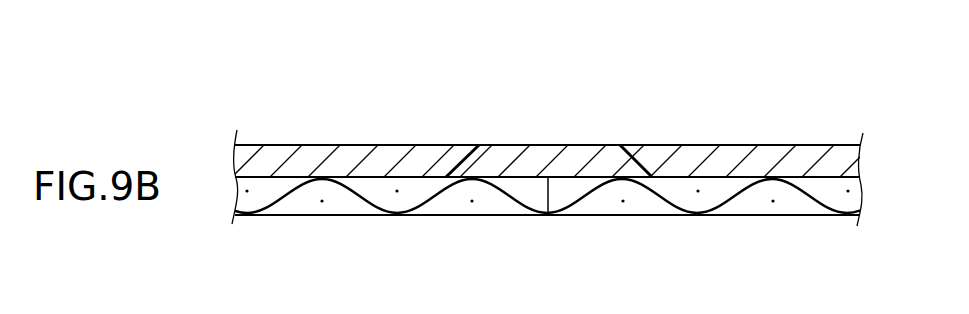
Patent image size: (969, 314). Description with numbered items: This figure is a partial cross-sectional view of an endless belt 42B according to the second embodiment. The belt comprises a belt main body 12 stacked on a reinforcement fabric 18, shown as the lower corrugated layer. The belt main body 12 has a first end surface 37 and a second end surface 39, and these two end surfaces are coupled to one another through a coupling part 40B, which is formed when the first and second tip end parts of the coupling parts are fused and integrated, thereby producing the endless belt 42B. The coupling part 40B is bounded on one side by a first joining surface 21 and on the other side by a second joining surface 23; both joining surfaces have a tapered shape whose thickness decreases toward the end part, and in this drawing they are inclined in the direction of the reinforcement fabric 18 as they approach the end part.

The belt main body 12 is at (807, 162).
The reinforcement fabric 18 is at (752, 202).
The first joining surface 21 is at (459, 172).
The second joining surface 23 is at (645, 145).
The first end surface 37 is at (467, 180).
The second end surface 39 is at (630, 180).
The coupling part 40B is at (547, 162).
The endless belt 42B is at (728, 100).